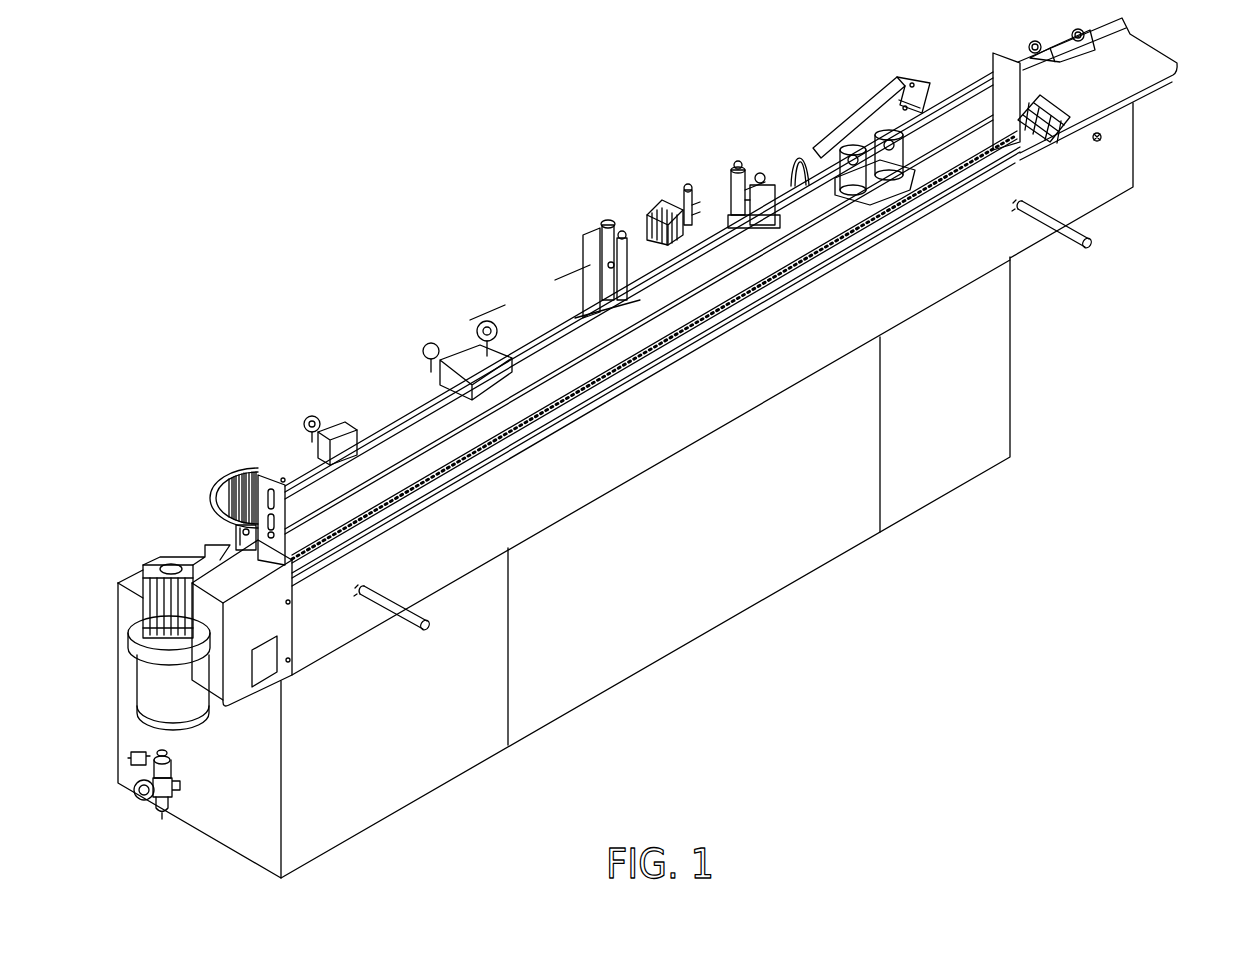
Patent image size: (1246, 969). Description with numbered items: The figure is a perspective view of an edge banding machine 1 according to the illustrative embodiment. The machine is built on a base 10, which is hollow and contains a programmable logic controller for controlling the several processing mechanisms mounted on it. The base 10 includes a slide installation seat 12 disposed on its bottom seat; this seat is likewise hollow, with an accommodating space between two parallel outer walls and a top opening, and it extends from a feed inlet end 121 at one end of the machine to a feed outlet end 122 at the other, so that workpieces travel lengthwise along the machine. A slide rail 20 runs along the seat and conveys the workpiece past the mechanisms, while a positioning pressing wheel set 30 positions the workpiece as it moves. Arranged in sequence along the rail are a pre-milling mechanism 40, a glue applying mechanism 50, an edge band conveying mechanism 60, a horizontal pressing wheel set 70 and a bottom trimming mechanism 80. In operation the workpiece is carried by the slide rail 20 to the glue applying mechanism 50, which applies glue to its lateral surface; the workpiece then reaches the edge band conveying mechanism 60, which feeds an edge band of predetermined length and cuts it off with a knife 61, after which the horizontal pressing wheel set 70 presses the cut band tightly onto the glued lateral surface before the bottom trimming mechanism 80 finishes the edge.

The edge banding machine 1 is at (232, 198).
The base 10 is at (1049, 371).
The slide installation seat 12 is at (627, 443).
The feed inlet end 121 is at (1068, 102).
The feed outlet end 122 is at (305, 571).
The slide rail 20 is at (1057, 122).
The positioning pressing wheel set 30 is at (958, 113).
The pre-milling mechanism 40 is at (875, 128).
The glue applying mechanism 50 is at (757, 148).
The edge band conveying mechanism 60 is at (688, 180).
The knife 61 is at (683, 195).
The horizontal pressing wheel set 70 is at (643, 222).
The bottom trimming mechanism 80 is at (440, 332).